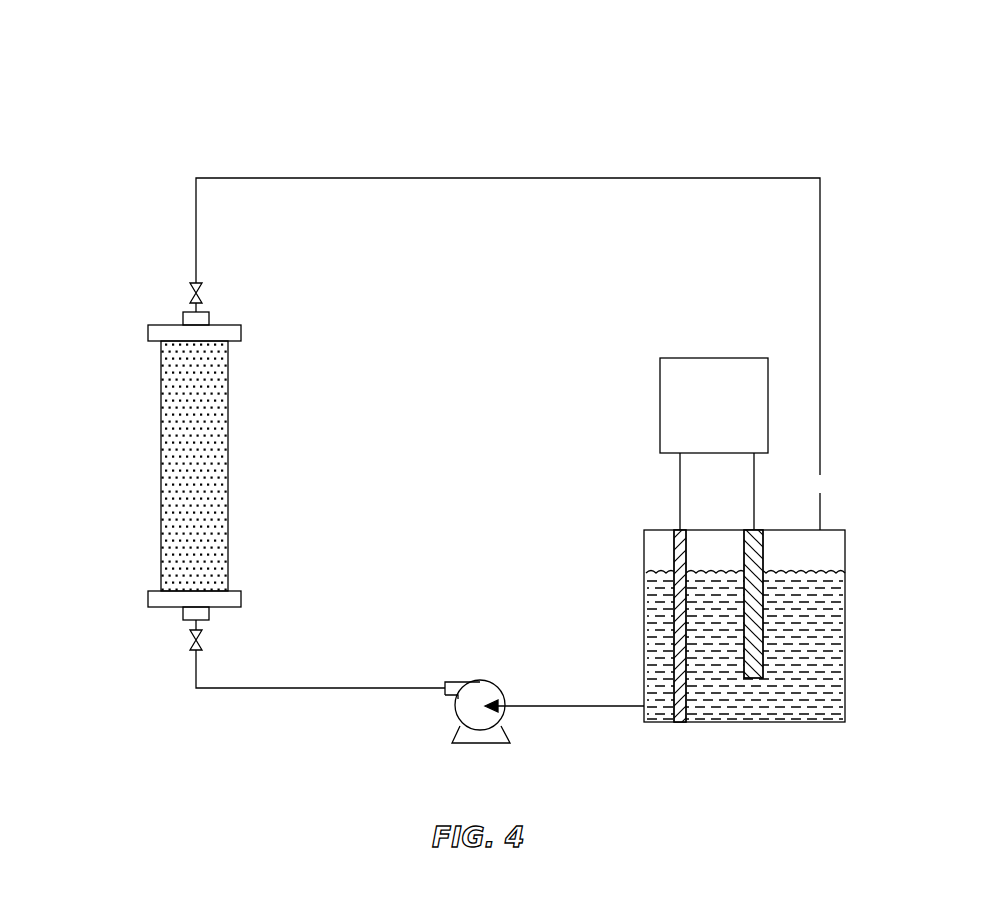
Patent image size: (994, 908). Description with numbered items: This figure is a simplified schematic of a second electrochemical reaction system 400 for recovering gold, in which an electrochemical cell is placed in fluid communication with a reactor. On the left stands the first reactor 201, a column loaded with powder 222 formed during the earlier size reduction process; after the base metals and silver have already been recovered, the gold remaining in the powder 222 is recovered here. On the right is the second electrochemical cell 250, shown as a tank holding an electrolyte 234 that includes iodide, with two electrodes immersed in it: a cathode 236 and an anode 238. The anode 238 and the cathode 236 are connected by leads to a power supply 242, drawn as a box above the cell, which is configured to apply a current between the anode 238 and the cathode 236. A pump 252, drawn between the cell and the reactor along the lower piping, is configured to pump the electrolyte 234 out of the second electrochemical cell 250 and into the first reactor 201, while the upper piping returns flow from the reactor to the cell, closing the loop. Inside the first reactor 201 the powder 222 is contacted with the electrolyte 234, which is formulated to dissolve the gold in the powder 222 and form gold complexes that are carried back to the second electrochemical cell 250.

The second electrochemical reaction system 400 is at (770, 153).
The first reactor 201 is at (152, 466).
The powder 222 is at (149, 409).
The power supply 242 is at (732, 416).
The second electrochemical cell 250 is at (686, 625).
The electrolyte 234 is at (824, 640).
The anode 238 is at (672, 706).
The cathode 236 is at (757, 678).
The pump 252 is at (452, 732).